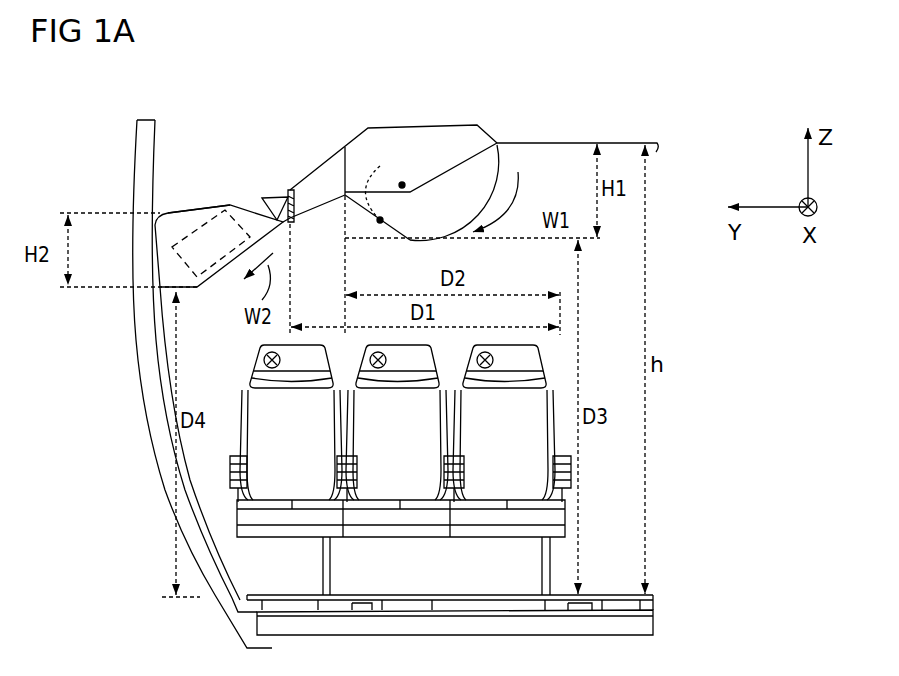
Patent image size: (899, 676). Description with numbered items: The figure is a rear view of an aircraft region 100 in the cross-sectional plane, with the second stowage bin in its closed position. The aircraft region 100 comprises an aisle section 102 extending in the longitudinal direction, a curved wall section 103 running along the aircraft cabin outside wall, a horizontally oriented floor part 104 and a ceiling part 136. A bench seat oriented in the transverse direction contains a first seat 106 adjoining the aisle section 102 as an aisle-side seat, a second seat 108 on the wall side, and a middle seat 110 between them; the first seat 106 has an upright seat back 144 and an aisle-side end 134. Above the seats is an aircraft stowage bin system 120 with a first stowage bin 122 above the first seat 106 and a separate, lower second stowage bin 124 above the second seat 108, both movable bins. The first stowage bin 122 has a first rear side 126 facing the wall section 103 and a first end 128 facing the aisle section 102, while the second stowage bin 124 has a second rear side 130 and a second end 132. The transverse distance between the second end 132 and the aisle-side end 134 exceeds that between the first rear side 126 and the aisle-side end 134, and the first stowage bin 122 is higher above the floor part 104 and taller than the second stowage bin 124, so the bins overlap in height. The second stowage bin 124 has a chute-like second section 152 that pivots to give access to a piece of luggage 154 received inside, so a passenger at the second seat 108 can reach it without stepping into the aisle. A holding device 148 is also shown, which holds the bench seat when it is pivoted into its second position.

The aircraft region 100 is at (688, 98).
The aisle section 102 is at (622, 447).
The wall section 103 is at (148, 412).
The floor part 104 is at (599, 594).
The first seat 106 is at (433, 470).
The second seat 108 is at (294, 500).
The middle seat 110 is at (400, 500).
The aircraft stowage bin system 120 is at (430, 154).
The first stowage bin 122 is at (447, 124).
The second stowage bin 124 is at (197, 211).
The first rear side 126 is at (391, 188).
The first end 128 is at (507, 152).
The second rear side 130 is at (150, 243).
The second end 132 is at (296, 224).
The aisle-side end 134 is at (570, 478).
The ceiling part 136 is at (616, 142).
The seat back 144 is at (550, 402).
The holding device 148 is at (289, 189).
The second section 152 is at (257, 210).
The piece of luggage 154 is at (238, 272).